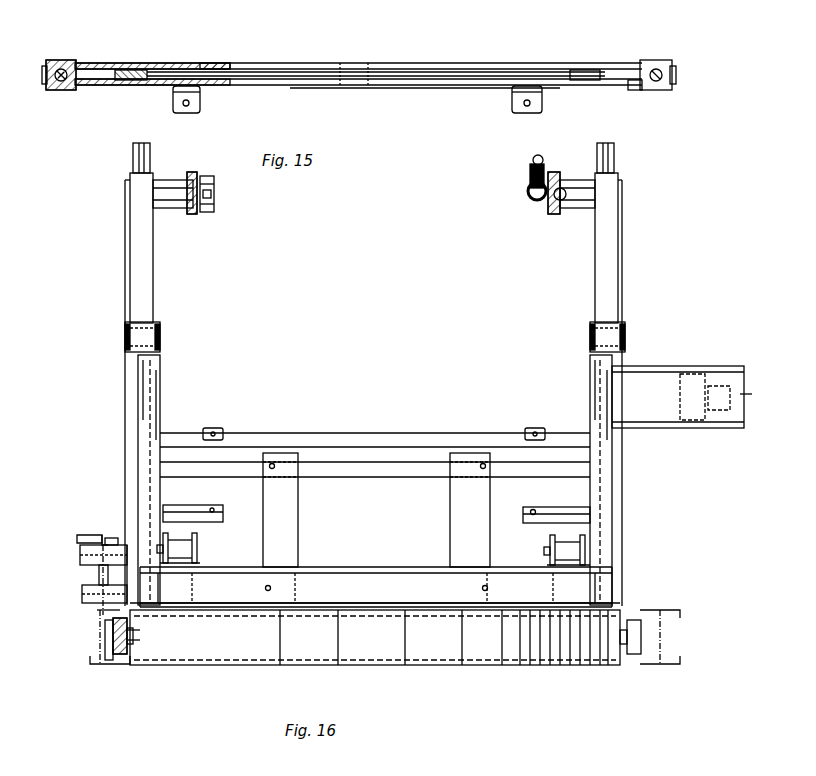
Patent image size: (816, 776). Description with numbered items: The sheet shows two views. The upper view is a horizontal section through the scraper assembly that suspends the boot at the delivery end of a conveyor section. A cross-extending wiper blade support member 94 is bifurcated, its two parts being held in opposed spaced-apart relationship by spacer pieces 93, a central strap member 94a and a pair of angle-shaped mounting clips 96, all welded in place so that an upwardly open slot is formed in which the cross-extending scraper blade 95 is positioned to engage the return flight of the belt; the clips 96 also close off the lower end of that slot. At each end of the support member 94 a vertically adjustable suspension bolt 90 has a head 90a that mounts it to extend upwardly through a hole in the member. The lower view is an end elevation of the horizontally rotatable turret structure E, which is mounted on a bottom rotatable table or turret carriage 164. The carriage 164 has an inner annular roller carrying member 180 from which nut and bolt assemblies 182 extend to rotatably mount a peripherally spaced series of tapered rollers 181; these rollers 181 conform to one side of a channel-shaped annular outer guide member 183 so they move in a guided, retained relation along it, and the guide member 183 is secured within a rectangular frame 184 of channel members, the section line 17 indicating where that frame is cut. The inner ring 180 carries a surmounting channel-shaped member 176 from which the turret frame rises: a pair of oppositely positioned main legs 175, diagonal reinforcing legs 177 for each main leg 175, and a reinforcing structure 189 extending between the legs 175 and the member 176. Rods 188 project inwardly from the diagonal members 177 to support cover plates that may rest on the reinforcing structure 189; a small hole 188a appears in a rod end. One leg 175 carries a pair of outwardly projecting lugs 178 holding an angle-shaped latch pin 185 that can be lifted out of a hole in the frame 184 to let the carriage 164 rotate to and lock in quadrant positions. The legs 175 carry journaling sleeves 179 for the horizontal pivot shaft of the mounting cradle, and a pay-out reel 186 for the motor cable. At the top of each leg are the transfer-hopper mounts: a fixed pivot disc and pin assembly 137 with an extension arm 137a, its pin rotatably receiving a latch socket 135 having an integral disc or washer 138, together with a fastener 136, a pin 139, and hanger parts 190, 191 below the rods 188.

In FIG. 15, the suspension bolt 90 is at (64, 60).
In FIG. 15, the bolt head 90a is at (634, 88).
In FIG. 15, the spacer piece 93 is at (126, 81).
In FIG. 15, the wiper blade support member 94 is at (104, 66).
In FIG. 15, the central strap member 94a is at (338, 82).
In FIG. 15, the scraper blade 95 is at (276, 70).
In FIG. 15, the angle-shaped mounting clip 96 is at (203, 100).
In FIG. 16, the latch socket 135 is at (214, 212).
In FIG. 16, the bolt 136 is at (214, 186).
In FIG. 16, the pivot disc and pin assembly 137 is at (194, 215).
In FIG. 16, the extension arm 137a is at (165, 180).
In FIG. 16, the disc or washer 138 is at (194, 214).
In FIG. 16, the pin 139 is at (560, 206).
In FIG. 16, the turret carriage 164 is at (375, 634).
In FIG. 16, the main leg 175 is at (130, 244).
In FIG. 16, the channel-shaped member 176 is at (382, 567).
In FIG. 16, the diagonal reinforcing leg 177 is at (136, 376).
In FIG. 16, the outwardly projecting lug 178 is at (78, 590).
In FIG. 16, the journaling sleeve 179 is at (162, 332).
In FIG. 16, the roller carrying member 180 is at (480, 664).
In FIG. 16, the tapered roller 181 is at (120, 656).
In FIG. 16, the nut and bolt assembly 182 is at (152, 638).
In FIG. 16, the channel-shaped outer guide member 183 is at (106, 638).
In FIG. 16, the rectangular frame 184 is at (92, 666).
In FIG. 16, the angle-shaped latch pin 185 is at (82, 534).
In FIG. 16, the pay-out reel 186 is at (718, 426).
In FIG. 16, the rod 188 is at (184, 504).
In FIG. 16, the bar hole 188a is at (532, 508).
In FIG. 16, the reinforcing structure 189 is at (432, 496).
In FIG. 16, the hanger 190 is at (198, 538).
In FIG. 16, the bolt 191 is at (198, 544).
In FIG. 16, the section line 17- 17 is at (80, 612).
In FIG. 16, the turret structure E is at (630, 294).